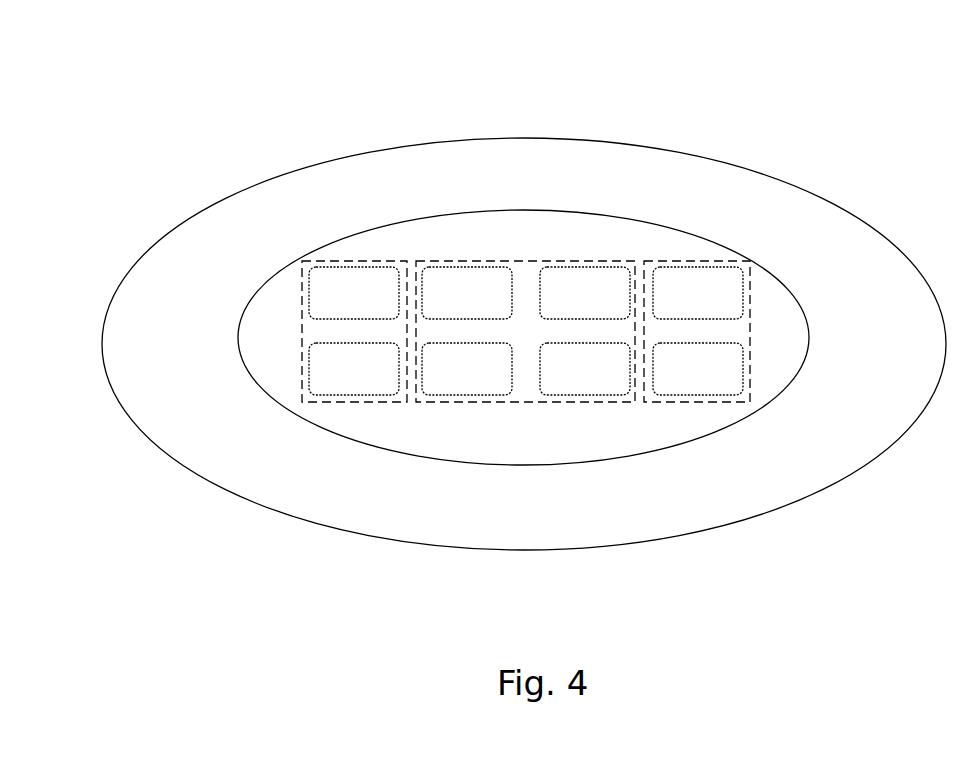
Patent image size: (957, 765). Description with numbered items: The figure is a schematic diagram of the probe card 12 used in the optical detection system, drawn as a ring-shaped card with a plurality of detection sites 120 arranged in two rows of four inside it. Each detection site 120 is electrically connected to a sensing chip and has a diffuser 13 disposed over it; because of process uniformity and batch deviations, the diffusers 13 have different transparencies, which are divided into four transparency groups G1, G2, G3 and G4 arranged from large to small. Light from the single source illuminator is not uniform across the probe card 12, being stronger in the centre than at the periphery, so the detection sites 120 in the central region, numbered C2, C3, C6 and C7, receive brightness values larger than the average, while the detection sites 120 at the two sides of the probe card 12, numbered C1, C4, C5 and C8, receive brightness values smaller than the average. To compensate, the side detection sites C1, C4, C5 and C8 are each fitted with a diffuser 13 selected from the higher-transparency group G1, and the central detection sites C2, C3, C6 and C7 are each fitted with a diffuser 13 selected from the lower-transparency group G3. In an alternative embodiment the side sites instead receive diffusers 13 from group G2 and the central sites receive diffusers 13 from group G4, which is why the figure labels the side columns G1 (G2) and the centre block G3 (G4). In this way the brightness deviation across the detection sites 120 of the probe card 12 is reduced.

The probe card 12 is at (125, 327).
The detection sites 120 is at (296, 310).
The diffusers 13 is at (321, 293).
The transparency group G1 is at (695, 250).
The transparency group G2 is at (402, 289).
The transparency group G3 is at (526, 415).
The transparency group G4 is at (525, 331).
The detection site No. C1 is at (354, 293).
The detection site No. C2 is at (467, 293).
The detection site No. C3 is at (585, 293).
The detection site No. C4 is at (698, 293).
The detection site No. C5 is at (354, 369).
The detection site No. C6 is at (467, 369).
The detection site No. C7 is at (585, 369).
The detection site No. C8 is at (698, 369).